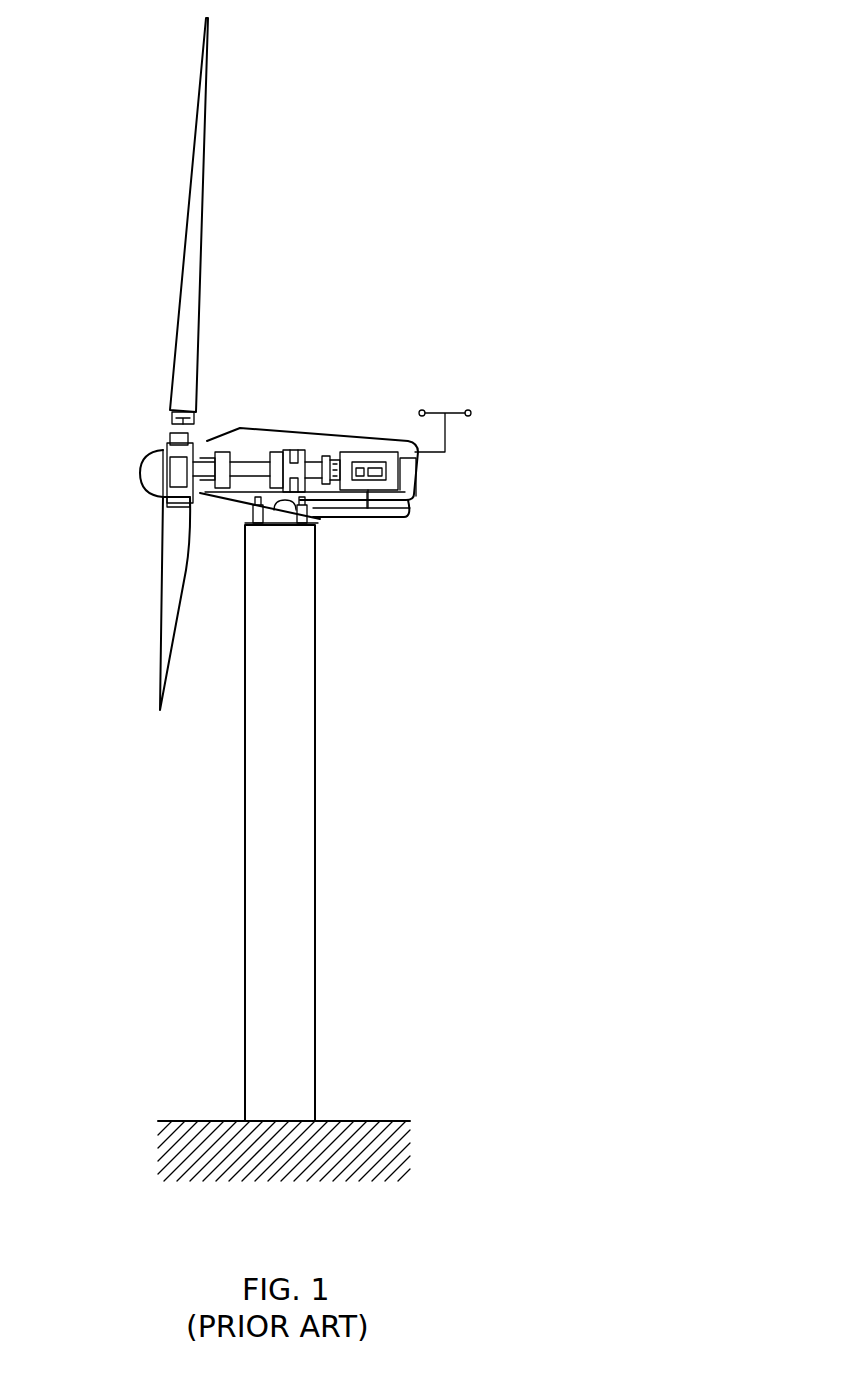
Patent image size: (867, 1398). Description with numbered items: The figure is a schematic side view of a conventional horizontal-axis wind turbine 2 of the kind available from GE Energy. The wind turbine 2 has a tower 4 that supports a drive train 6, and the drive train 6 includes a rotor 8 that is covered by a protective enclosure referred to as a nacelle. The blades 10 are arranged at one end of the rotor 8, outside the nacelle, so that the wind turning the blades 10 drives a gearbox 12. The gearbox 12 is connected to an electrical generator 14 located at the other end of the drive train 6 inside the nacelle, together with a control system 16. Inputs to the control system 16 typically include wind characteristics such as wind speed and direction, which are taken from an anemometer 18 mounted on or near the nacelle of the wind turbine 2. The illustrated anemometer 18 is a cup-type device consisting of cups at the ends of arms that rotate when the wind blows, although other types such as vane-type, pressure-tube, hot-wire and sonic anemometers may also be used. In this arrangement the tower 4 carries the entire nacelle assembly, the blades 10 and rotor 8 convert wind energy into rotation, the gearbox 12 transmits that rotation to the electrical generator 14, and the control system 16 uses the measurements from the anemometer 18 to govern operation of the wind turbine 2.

The wind turbine 2 is at (508, 224).
The tower 4 is at (297, 616).
The drive train 6 is at (455, 478).
The rotor 8 is at (237, 455).
The blades 10 is at (187, 298).
The gearbox 12 is at (296, 452).
The electrical generator 14 is at (383, 452).
The control system 16 is at (330, 452).
The anemometer 18 is at (455, 411).